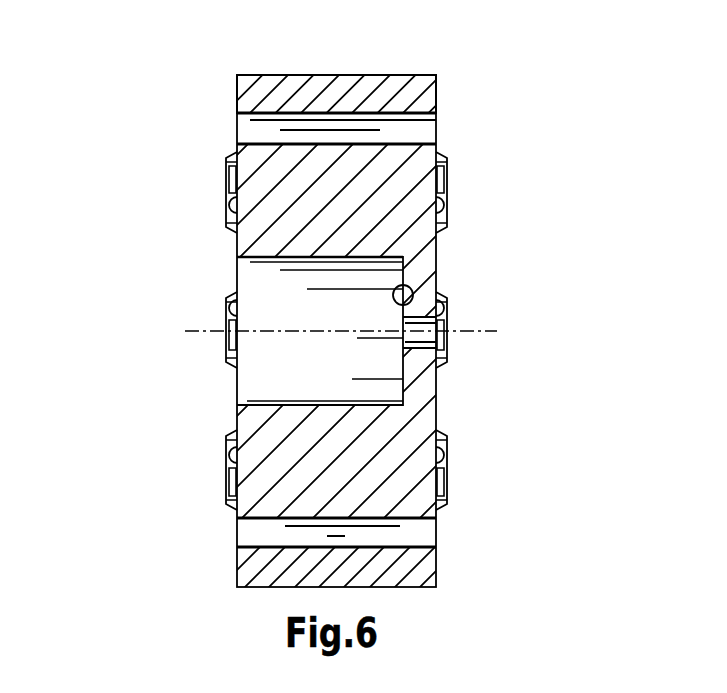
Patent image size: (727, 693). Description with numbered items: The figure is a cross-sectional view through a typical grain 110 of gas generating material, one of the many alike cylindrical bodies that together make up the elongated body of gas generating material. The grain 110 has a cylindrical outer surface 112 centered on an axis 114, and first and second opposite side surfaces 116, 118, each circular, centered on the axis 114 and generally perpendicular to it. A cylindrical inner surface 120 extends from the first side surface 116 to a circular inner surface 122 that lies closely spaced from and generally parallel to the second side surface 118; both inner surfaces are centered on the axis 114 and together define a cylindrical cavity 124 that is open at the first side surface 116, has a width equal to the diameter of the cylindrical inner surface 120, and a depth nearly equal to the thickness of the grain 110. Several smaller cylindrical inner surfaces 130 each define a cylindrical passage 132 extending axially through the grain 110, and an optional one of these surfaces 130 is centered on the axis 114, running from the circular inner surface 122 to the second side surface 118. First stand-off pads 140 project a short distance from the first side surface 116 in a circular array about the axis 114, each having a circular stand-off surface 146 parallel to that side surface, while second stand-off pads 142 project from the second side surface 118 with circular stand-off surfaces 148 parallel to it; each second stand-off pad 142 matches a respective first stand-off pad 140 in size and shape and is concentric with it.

The grain 110 is at (103, 105).
The cylindrical outer surface 112 is at (337, 75).
The axis 114 is at (185, 330).
The first side surface 116 is at (236, 92).
The second side surface 118 is at (438, 100).
The cylindrical inner surface 120 is at (237, 262).
The circular inner surface 122 is at (403, 274).
The cylindrical cavity 124 is at (339, 322).
The smaller cylindrical inner surface 130 is at (238, 133).
The cylindrical passage 132 is at (237, 126).
The first stand-off pad 140 is at (226, 182).
The second stand-off pad 142 is at (452, 175).
The circular stand-off surface 146 is at (232, 202).
The circular stand-off surface 148 is at (448, 204).